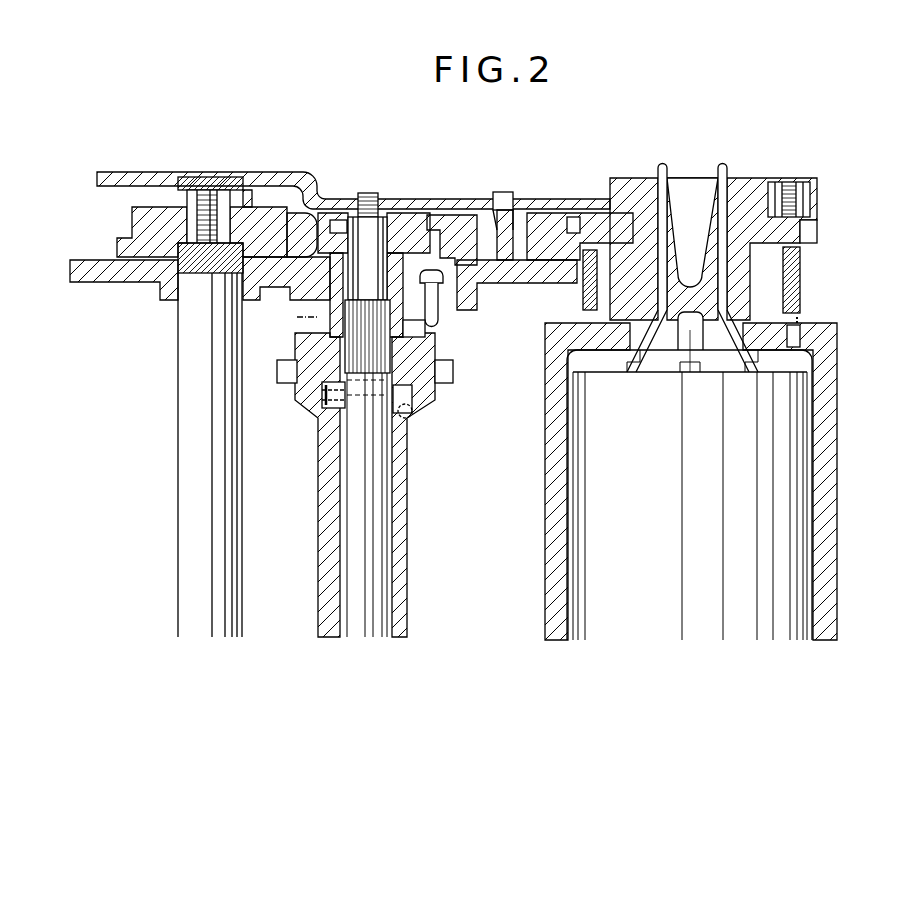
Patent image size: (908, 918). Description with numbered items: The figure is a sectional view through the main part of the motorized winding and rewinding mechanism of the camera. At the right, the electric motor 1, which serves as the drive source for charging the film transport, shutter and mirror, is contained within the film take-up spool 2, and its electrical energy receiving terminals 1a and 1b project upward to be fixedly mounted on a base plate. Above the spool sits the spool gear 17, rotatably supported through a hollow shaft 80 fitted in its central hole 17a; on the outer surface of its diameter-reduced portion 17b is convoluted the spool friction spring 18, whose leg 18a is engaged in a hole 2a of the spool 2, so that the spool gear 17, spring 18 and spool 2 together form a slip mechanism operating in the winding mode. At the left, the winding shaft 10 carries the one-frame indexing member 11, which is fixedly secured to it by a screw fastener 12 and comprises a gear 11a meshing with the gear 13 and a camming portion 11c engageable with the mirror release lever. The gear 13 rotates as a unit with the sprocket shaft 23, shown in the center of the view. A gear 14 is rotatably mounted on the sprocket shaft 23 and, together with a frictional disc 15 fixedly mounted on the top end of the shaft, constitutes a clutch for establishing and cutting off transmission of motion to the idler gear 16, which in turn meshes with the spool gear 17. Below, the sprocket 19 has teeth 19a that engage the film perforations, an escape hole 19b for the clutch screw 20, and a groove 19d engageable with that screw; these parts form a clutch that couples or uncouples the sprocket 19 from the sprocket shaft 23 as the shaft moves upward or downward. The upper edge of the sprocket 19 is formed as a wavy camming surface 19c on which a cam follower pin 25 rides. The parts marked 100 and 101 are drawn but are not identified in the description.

The electric motor 1 is at (790, 462).
The electrical energy receiving terminal 1a is at (662, 165).
The electrical energy receiving terminal 1b is at (726, 165).
The film take-up spool 2 is at (827, 520).
The hole 2a is at (800, 340).
The winding shaft 10 is at (188, 467).
The one-frame indexing member 11 is at (280, 207).
The gear 11a is at (288, 210).
The camming portion 11c is at (172, 200).
The screw fastener 12 is at (197, 178).
The gear 13 is at (310, 263).
The gear 14 is at (413, 213).
The frictional disc 15 is at (340, 210).
The idler gear 16 is at (462, 216).
The spool gear 17 is at (597, 222).
The central hole 17a is at (808, 228).
The diameter-reduced portion 17b is at (778, 272).
The spool friction spring 18 is at (582, 300).
The leg 18a is at (805, 340).
The sprocket 19 is at (408, 507).
The teeth 19a is at (453, 378).
The escape hole 19b is at (308, 374).
The wavy camming surface 19c is at (430, 332).
The groove 19d is at (430, 420).
The clutch screw 20 is at (327, 402).
The sprocket shaft 23 is at (373, 556).
The cam follower pin 25 is at (447, 320).
The hollow shaft 80 is at (625, 187).
The terminal bolt 100 is at (818, 210).
The terminal plate 101 is at (553, 262).